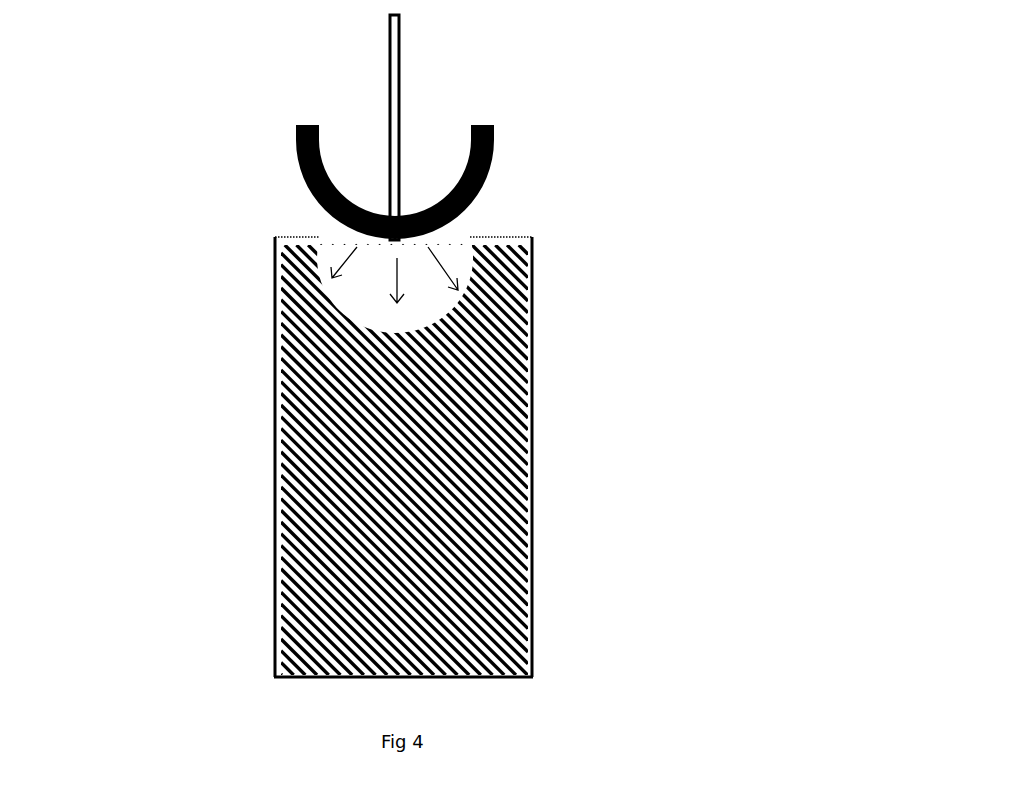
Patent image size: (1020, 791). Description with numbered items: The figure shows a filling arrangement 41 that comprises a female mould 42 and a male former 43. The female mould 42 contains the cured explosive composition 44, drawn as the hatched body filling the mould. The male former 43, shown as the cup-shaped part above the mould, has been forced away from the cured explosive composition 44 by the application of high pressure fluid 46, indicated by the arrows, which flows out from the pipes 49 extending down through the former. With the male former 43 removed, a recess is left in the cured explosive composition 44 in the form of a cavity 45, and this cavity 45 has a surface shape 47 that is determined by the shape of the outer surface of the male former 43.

The filling arrangement 41 is at (250, 465).
The female mould 42 is at (532, 555).
The male former 43 is at (487, 170).
The cured explosive composition 44 is at (460, 427).
The cavity 45 is at (410, 320).
The high pressure fluid 46 is at (345, 257).
The surface shape 47 is at (472, 261).
The pipes 49 is at (400, 108).